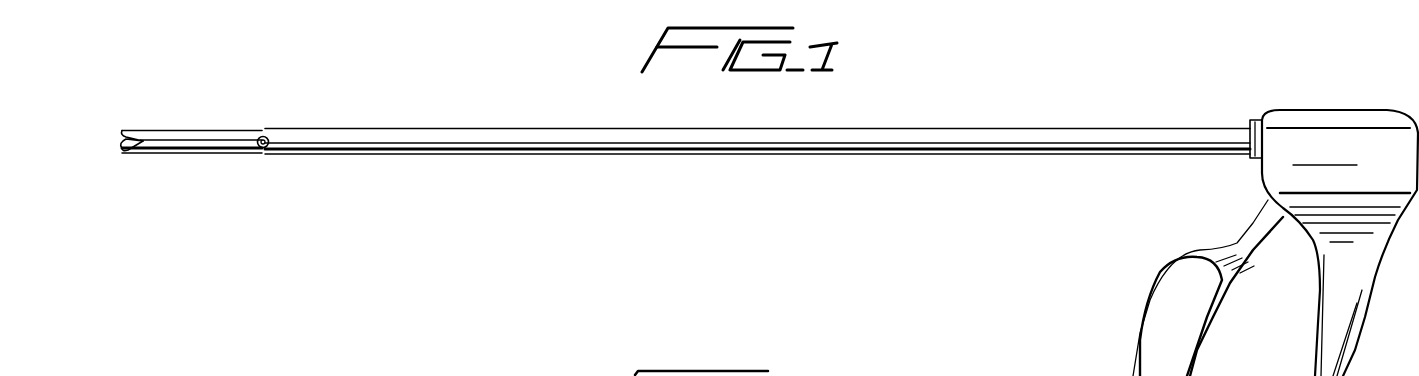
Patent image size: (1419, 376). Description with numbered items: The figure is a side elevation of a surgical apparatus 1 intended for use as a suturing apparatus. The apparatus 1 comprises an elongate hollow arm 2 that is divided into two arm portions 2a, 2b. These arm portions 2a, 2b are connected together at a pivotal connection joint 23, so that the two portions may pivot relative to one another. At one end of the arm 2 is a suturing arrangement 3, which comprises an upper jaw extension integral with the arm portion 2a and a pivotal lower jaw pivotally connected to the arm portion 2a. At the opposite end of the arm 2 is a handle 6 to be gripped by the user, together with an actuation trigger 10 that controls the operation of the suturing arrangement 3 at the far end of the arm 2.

The surgical apparatus 1 is at (1006, 106).
The elongate hollow arm 2 is at (890, 124).
The arm portion 2a is at (218, 130).
The arm portion 2b is at (602, 127).
The suturing arrangement 3 is at (130, 163).
The pivotal connection joint 23 is at (266, 152).
The actuation trigger 10 is at (1147, 322).
The handle 6 is at (1353, 330).